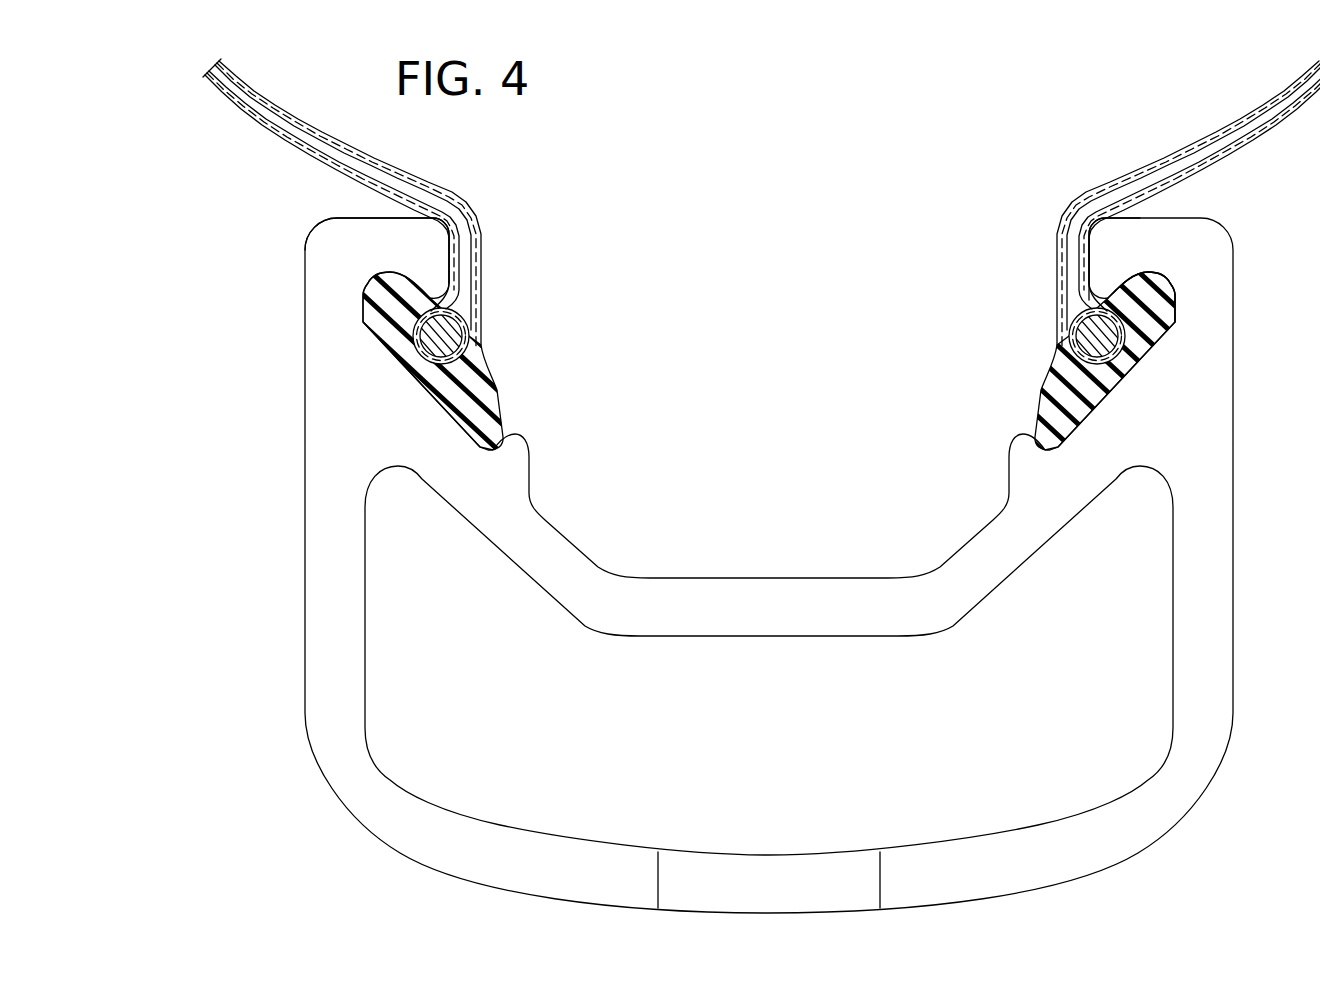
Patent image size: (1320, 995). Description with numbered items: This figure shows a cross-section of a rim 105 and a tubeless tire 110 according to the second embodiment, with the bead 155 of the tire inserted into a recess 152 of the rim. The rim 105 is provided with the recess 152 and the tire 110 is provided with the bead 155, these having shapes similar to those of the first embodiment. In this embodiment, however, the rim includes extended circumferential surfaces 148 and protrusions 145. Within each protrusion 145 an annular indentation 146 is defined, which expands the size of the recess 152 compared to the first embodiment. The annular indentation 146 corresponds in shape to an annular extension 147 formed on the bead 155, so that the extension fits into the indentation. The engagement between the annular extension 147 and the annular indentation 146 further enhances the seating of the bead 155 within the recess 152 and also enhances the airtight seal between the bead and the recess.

The rim 105 is at (258, 500).
The tubeless tire 110 is at (1228, 105).
The protrusion 145 is at (1108, 272).
The annular indentation 146 is at (1168, 275).
The annular extension 147 is at (1147, 295).
The extended circumferential surface 148 is at (372, 218).
The recess 152 is at (1115, 398).
The bead 155 is at (1135, 320).